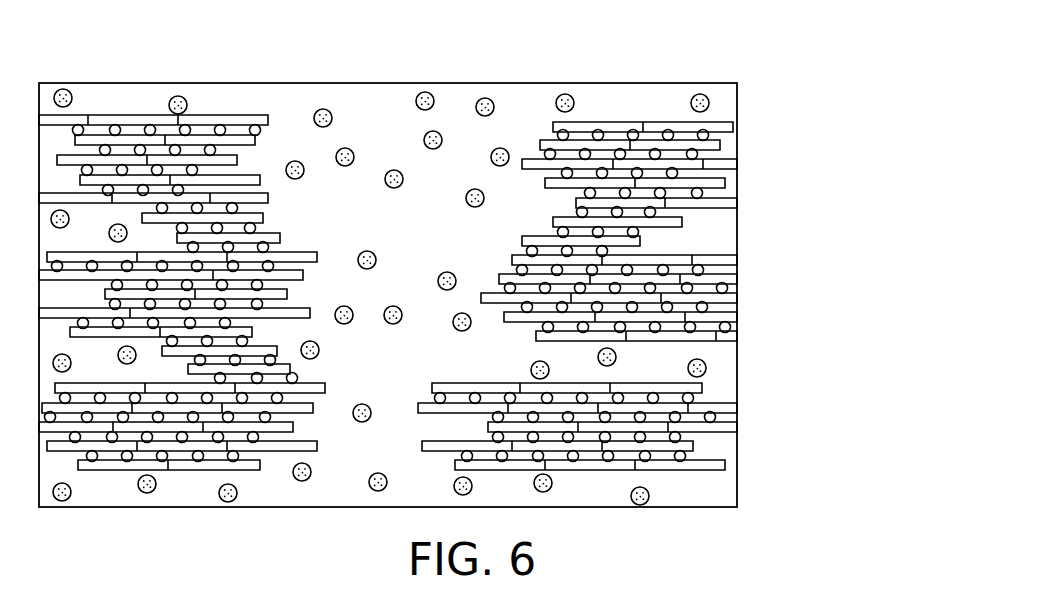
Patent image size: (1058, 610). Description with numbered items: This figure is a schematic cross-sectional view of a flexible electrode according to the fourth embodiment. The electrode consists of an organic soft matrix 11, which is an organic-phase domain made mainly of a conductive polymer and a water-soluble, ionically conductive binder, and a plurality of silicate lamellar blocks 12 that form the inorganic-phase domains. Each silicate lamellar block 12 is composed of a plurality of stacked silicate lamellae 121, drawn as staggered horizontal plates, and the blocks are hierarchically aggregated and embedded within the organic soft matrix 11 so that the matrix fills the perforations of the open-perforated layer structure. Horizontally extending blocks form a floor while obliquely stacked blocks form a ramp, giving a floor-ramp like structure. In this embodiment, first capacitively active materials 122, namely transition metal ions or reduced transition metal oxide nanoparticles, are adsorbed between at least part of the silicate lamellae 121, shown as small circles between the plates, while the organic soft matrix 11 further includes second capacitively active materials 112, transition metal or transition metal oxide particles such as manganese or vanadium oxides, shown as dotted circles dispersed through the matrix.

The organic soft matrix 11 is at (368, 102).
The second capacitively active materials 112 is at (65, 90).
The silicate lamellar blocks 12 is at (485, 247).
The silicate lamellae 121 is at (150, 115).
The first capacitively active materials 122 is at (257, 128).